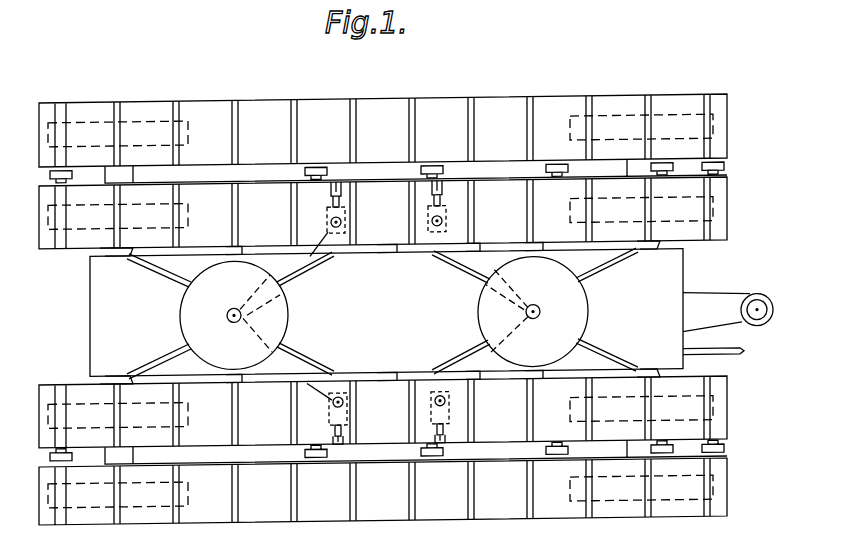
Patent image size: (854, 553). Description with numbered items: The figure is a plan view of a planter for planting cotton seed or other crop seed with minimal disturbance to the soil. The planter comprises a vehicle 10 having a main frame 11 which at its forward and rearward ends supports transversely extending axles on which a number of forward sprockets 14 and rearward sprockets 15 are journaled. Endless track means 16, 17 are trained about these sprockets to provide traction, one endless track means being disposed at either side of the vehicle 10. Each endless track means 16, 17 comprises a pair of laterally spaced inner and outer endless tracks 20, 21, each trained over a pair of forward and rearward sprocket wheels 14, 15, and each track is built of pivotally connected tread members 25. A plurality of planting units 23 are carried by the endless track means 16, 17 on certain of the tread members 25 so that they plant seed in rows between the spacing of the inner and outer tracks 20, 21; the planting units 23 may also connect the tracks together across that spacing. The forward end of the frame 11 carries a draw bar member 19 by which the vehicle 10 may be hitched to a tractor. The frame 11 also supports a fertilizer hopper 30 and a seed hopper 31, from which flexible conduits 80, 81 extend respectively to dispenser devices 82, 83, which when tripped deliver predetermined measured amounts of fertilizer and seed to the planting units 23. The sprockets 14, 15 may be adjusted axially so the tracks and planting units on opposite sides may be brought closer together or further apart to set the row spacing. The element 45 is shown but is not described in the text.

The vehicle 10 is at (730, 82).
The main frame 11 is at (694, 277).
The forward sprockets 14 is at (708, 199).
The rearward sprockets 15 is at (88, 126).
The endless track means 16 is at (732, 519).
The endless track means 17 is at (662, 110).
The draw bar member 19 is at (728, 311).
The inner endless track 20 is at (727, 216).
The outer endless track 21 is at (727, 141).
The planting units 23 is at (302, 176).
The tread members 25 is at (555, 115).
The fertilizer hopper 30 is at (587, 320).
The seed hopper 31 is at (282, 306).
The rod / pin 45 is at (727, 352).
The flexible conduit 80 is at (460, 356).
The flexible conduit 81 is at (283, 270).
The fertilizer dispenser device 82 is at (447, 414).
The seed dispenser device 83 is at (347, 414).